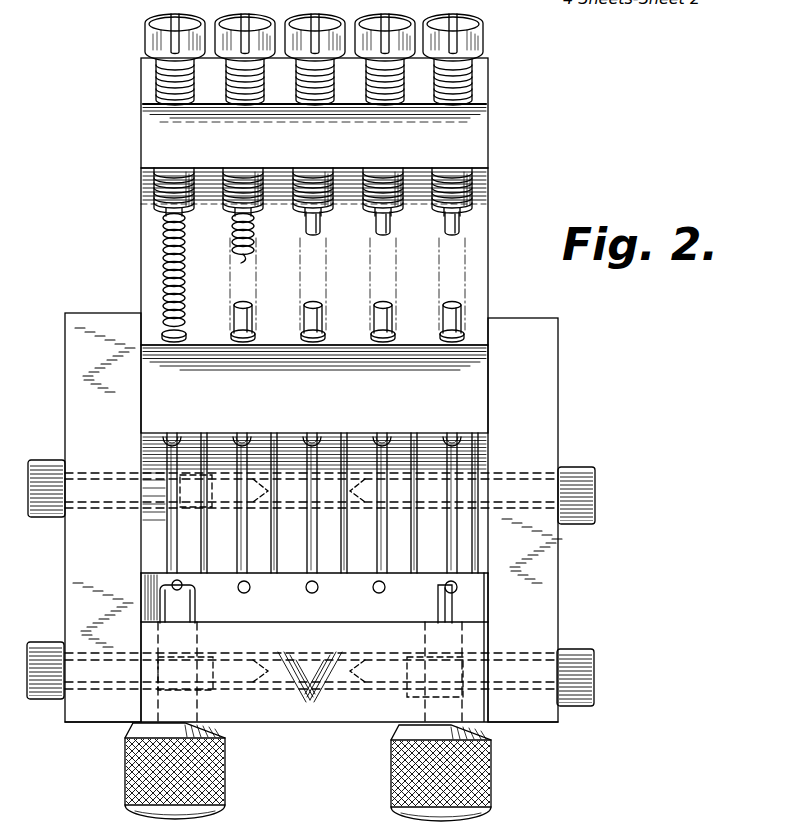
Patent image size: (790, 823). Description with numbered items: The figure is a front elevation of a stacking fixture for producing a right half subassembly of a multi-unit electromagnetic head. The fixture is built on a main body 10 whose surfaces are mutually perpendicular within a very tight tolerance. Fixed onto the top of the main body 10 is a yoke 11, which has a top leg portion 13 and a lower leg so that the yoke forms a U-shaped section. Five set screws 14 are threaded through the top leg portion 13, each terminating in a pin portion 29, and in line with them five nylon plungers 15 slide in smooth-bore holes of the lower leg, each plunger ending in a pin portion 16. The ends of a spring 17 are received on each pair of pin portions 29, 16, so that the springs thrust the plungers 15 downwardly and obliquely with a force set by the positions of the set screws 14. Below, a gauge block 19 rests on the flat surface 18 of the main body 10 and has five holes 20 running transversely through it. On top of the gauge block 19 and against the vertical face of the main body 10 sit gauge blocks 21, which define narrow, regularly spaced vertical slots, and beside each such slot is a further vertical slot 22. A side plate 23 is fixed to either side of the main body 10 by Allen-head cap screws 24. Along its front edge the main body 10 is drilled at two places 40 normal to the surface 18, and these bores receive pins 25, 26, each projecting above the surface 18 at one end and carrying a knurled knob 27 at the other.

The main body 10 is at (323, 712).
The yoke 11 is at (479, 253).
The top leg portion 13 is at (481, 144).
The set screws 14 is at (240, 28).
The nylon plungers 15 is at (176, 434).
The pin portion 16 is at (186, 323).
The spring 17 is at (232, 253).
The flat surface 18 is at (287, 624).
The gauge block 19 is at (342, 623).
The holes 20 is at (246, 594).
The gauge blocks 21 is at (150, 563).
The vertical slot 22 is at (208, 466).
The side plate 23 is at (95, 319).
The Allen-head cap screws 24 is at (46, 459).
The pin 25 is at (196, 612).
The pin 26 is at (437, 609).
The knurled knob 27 is at (226, 786).
The pin portion 29 is at (170, 224).
The drilled places 40 is at (198, 640).